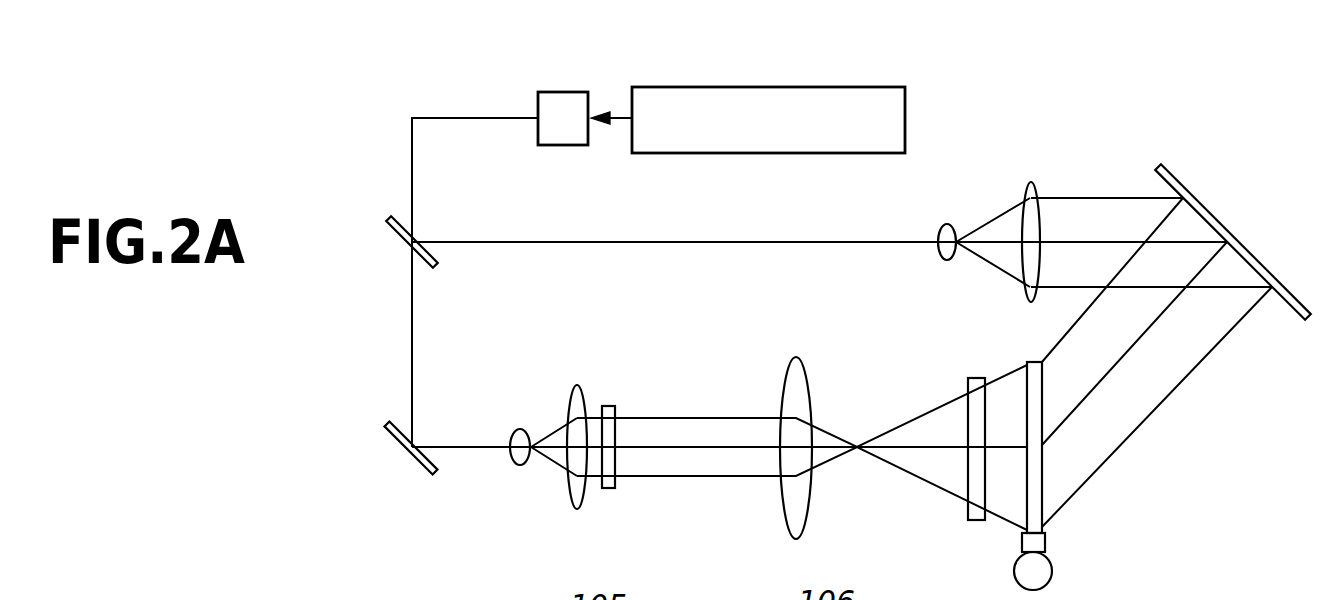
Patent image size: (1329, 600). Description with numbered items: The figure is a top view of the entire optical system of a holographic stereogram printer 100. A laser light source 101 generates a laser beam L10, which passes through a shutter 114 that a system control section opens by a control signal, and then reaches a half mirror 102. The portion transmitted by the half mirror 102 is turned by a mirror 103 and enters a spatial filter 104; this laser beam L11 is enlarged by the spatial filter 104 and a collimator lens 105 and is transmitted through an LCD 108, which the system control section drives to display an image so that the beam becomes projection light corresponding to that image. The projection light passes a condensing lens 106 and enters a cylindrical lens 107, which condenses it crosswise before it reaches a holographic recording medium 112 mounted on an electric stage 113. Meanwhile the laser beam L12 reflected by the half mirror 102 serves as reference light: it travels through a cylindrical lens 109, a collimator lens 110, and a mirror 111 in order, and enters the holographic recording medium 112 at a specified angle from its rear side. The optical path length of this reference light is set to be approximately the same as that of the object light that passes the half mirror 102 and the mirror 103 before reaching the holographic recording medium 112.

The holographic stereogram printer 100 is at (1130, 116).
The laser light source 101 is at (782, 87).
The half mirror 102 is at (395, 243).
The mirror 103 is at (393, 447).
The spatial filter 104 is at (520, 428).
The collimator lens 105 is at (577, 385).
The condensing lens 106 is at (796, 358).
The cylindrical lens 107 is at (974, 378).
The LCD 108 is at (608, 406).
The cylindrical lens 109 is at (945, 261).
The collimator lens 110 is at (1030, 182).
The mirror 111 is at (1200, 197).
The holographic recording medium 112 is at (1033, 497).
The electric stage 113 is at (1038, 570).
The shutter 114 is at (563, 92).
The laser beam L10 is at (492, 118).
The laser beam L11 is at (458, 447).
The laser beam L12 is at (500, 241).